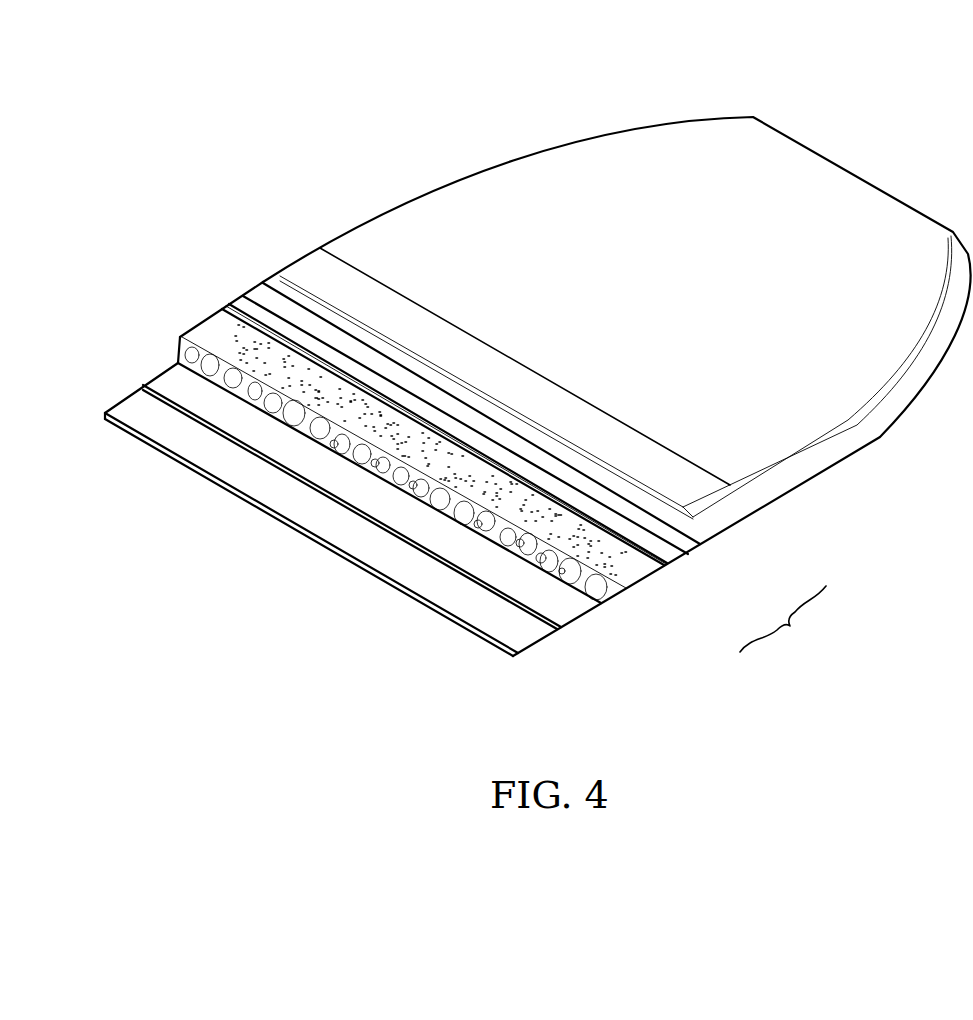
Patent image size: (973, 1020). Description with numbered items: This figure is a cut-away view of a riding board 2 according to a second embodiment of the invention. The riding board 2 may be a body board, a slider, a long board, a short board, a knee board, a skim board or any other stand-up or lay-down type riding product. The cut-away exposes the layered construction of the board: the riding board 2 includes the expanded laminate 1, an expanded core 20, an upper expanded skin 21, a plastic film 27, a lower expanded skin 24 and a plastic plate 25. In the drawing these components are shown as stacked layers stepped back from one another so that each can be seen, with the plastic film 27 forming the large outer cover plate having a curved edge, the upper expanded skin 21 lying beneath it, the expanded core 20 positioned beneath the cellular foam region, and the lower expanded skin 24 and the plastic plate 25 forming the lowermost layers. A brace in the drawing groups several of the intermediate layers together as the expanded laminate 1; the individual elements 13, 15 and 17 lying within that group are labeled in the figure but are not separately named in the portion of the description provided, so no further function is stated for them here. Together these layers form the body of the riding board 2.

The riding board 2 is at (340, 146).
The plastic film 27 is at (800, 418).
The upper expanded skin 21 is at (690, 487).
The first film layer 15 is at (640, 518).
The second film layer 13 is at (640, 537).
The foam layer 17 is at (610, 552).
The expanded core 20 is at (657, 572).
The lower expanded skin 24 is at (568, 600).
The plastic plate 25 is at (530, 632).
The expanded laminate 1 is at (783, 627).